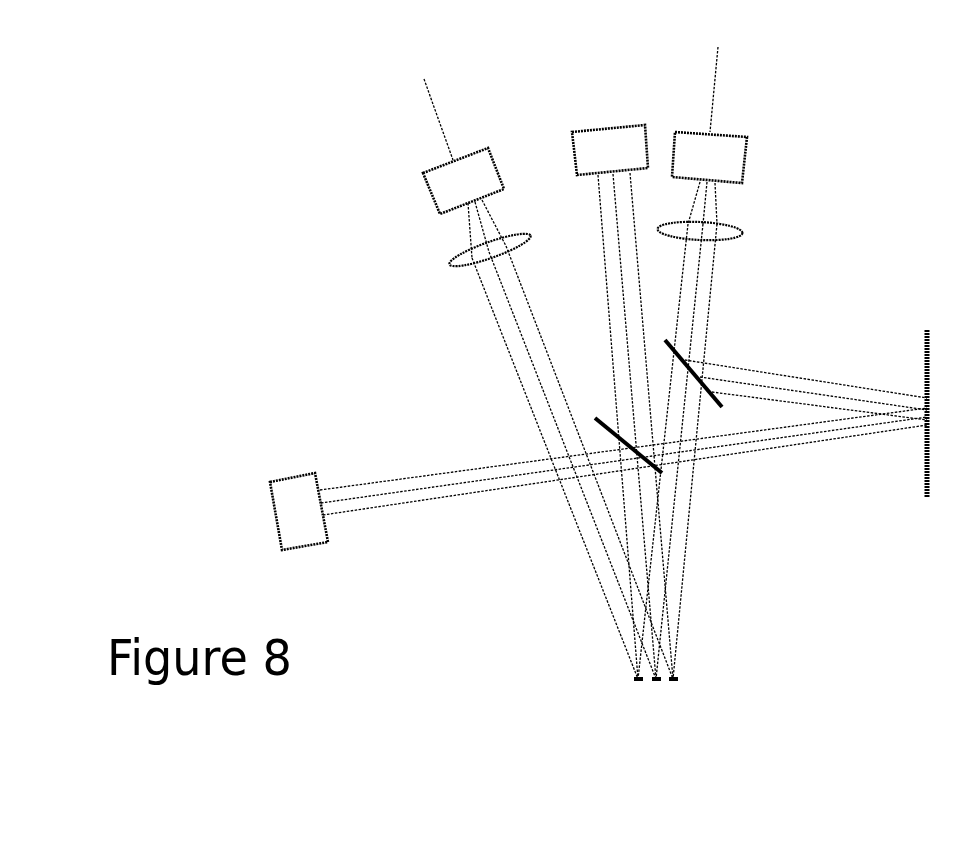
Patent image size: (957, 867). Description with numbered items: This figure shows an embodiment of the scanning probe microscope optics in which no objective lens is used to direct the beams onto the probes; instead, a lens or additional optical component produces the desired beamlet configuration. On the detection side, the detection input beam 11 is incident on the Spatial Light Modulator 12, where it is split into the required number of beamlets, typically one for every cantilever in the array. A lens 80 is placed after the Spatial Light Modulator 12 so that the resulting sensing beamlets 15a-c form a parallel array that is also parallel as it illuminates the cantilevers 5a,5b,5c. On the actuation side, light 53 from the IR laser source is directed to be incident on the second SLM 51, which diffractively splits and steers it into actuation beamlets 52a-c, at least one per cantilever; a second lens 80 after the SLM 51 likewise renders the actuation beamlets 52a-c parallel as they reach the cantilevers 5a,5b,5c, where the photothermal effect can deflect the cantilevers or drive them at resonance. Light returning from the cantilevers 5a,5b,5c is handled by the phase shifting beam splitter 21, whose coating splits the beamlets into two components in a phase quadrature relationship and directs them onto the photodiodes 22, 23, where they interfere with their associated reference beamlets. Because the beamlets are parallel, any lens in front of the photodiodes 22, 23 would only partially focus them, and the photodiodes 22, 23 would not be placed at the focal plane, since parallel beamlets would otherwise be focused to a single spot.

The light from the laser source 53 is at (437, 121).
The second SLM 51 is at (427, 193).
The lens 80 is at (437, 270).
The actuation beamlets 52a-c is at (488, 330).
The photodiode 22 is at (609, 126).
The detection input beam 11 is at (723, 68).
The Spatial Light Modulator 12 is at (754, 160).
The sensing beamlets 15a-c is at (719, 295).
The phase shifting beam splitter 21 is at (605, 414).
The photodiode 23 is at (268, 507).
The cantilevers 5a,5b,5c is at (637, 694).